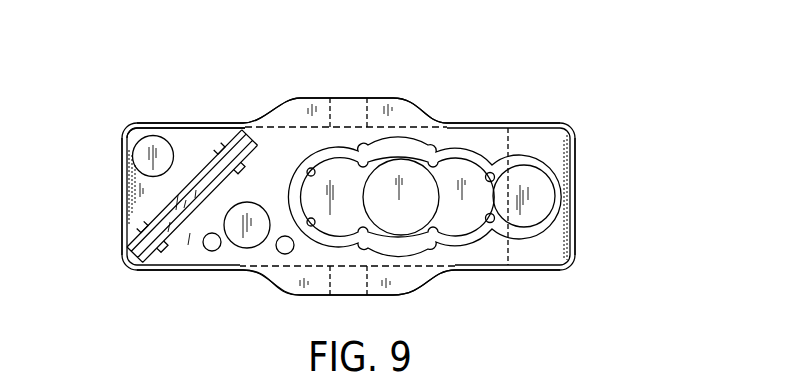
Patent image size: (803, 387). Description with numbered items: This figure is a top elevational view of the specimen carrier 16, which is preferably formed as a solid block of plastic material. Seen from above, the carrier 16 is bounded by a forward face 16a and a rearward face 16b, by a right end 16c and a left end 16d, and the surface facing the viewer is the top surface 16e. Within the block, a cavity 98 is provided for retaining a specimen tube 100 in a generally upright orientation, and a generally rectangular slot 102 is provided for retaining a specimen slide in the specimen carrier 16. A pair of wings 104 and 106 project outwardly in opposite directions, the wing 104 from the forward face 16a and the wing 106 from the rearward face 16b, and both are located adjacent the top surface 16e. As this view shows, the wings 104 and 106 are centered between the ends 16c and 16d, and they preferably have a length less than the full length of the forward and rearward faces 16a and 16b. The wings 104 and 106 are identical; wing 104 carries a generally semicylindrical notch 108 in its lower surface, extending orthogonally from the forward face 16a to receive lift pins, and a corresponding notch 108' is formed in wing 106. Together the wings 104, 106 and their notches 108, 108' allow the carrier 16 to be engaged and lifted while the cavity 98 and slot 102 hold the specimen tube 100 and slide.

The specimen carrier 16 is at (613, 177).
The forward face 16a is at (492, 268).
The rearward face 16b is at (177, 122).
The right end 16c is at (574, 217).
The left end 16d is at (121, 188).
The top surface 16e is at (278, 157).
The cavity 98 is at (466, 172).
The specimen tube 100 is at (403, 156).
The rectangular slot 102 is at (225, 167).
The wing 104 is at (393, 296).
The wing 106 is at (392, 102).
The semicylindrical notch 108 is at (316, 305).
The notch 108' is at (333, 84).